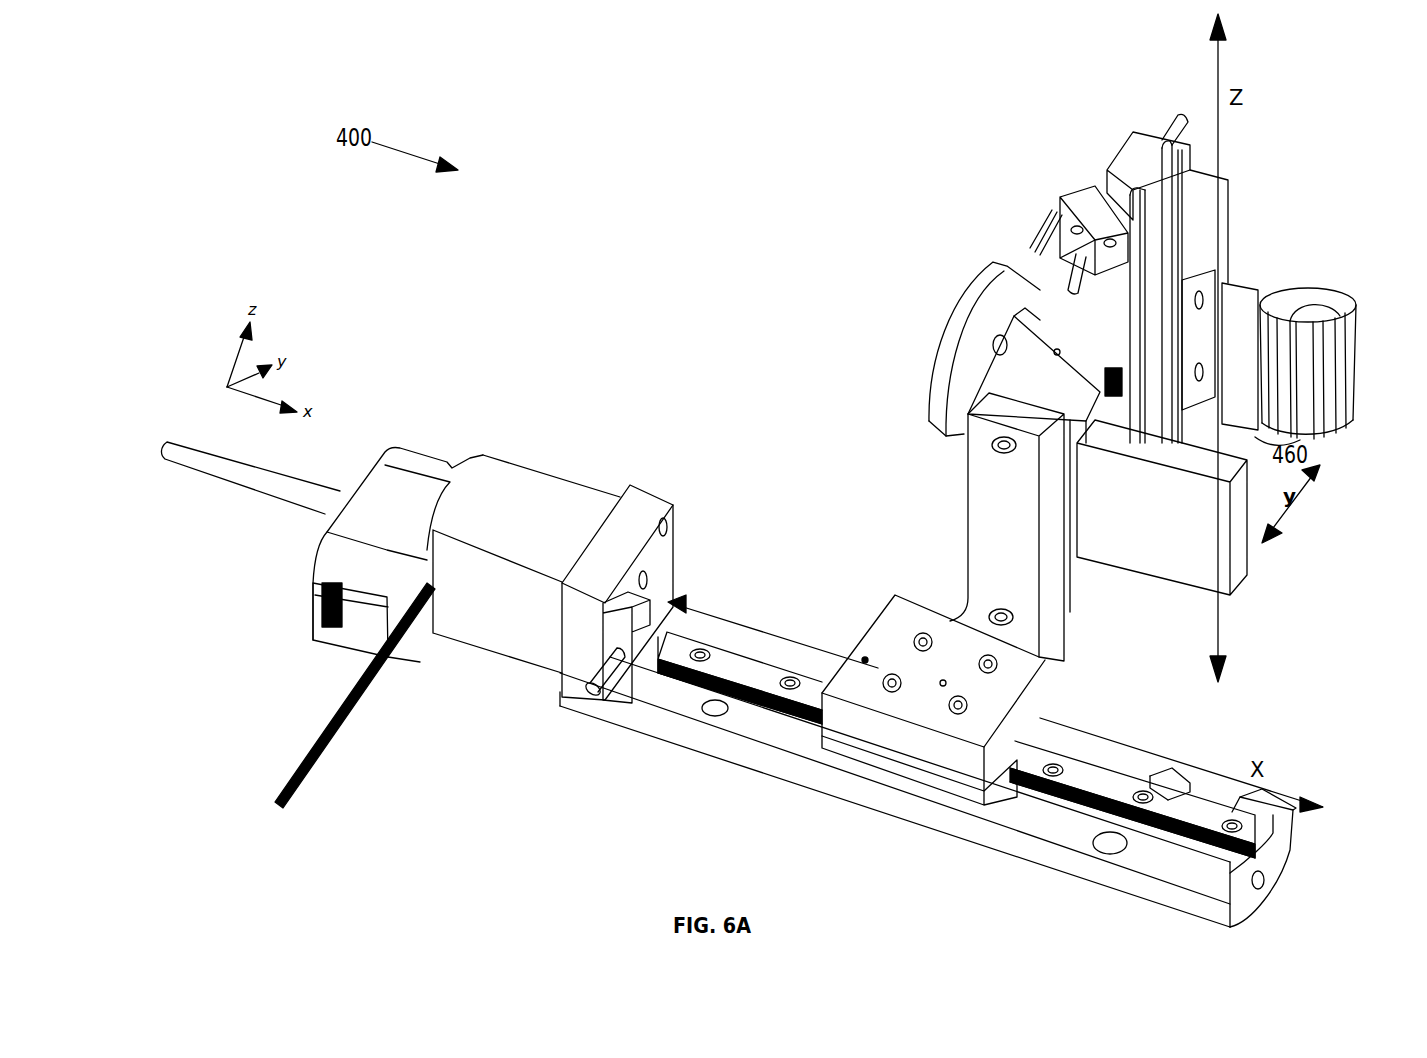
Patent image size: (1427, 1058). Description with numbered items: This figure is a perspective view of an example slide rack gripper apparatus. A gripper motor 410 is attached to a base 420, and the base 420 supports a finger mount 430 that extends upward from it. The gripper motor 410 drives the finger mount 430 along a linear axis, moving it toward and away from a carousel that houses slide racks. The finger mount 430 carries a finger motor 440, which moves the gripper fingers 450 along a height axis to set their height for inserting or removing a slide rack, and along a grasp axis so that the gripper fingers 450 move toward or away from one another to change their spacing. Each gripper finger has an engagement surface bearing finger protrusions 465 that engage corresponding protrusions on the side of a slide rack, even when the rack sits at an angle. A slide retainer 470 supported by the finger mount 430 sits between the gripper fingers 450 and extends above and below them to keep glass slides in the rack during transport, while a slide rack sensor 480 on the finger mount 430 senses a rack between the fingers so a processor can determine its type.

The gripper motor 410 is at (500, 628).
The base 420 is at (965, 822).
The finger mount 430 is at (1030, 362).
The finger motor 440 is at (985, 325).
The gripper fingers 450 is at (1247, 273).
The finger protrusions 465 is at (1310, 287).
The slide retainer 470 is at (1157, 147).
The slide rack sensor 480 is at (1077, 213).